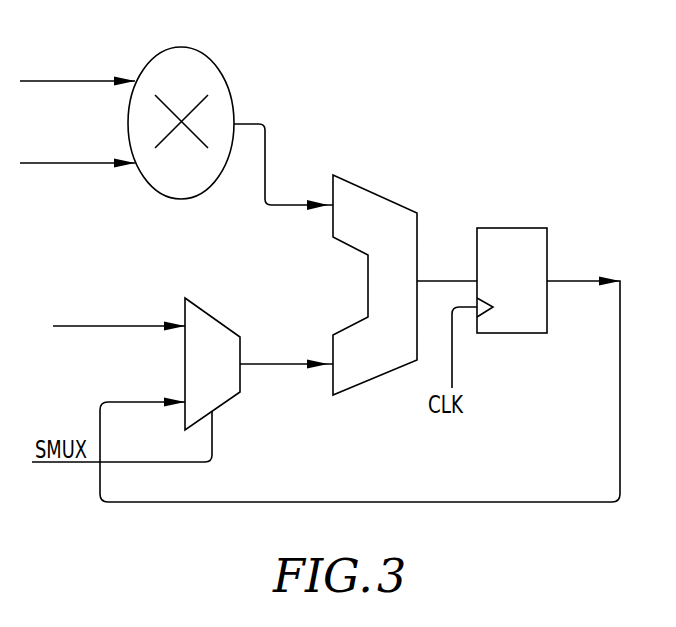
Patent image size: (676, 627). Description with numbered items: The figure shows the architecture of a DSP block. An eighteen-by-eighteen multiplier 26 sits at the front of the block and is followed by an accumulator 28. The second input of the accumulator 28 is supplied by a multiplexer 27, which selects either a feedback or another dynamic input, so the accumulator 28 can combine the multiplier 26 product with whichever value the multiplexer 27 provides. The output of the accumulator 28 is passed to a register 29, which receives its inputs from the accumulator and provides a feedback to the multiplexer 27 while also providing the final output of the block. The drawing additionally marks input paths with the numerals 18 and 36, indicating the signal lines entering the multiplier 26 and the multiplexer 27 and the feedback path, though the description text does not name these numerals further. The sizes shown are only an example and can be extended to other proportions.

The input bus 18 is at (71, 95).
The 18×18 multiplier 26 is at (208, 54).
The multiplexer 27 is at (218, 320).
The accumulator 28 is at (395, 198).
The register 29 is at (547, 323).
The bus 36 is at (98, 340).